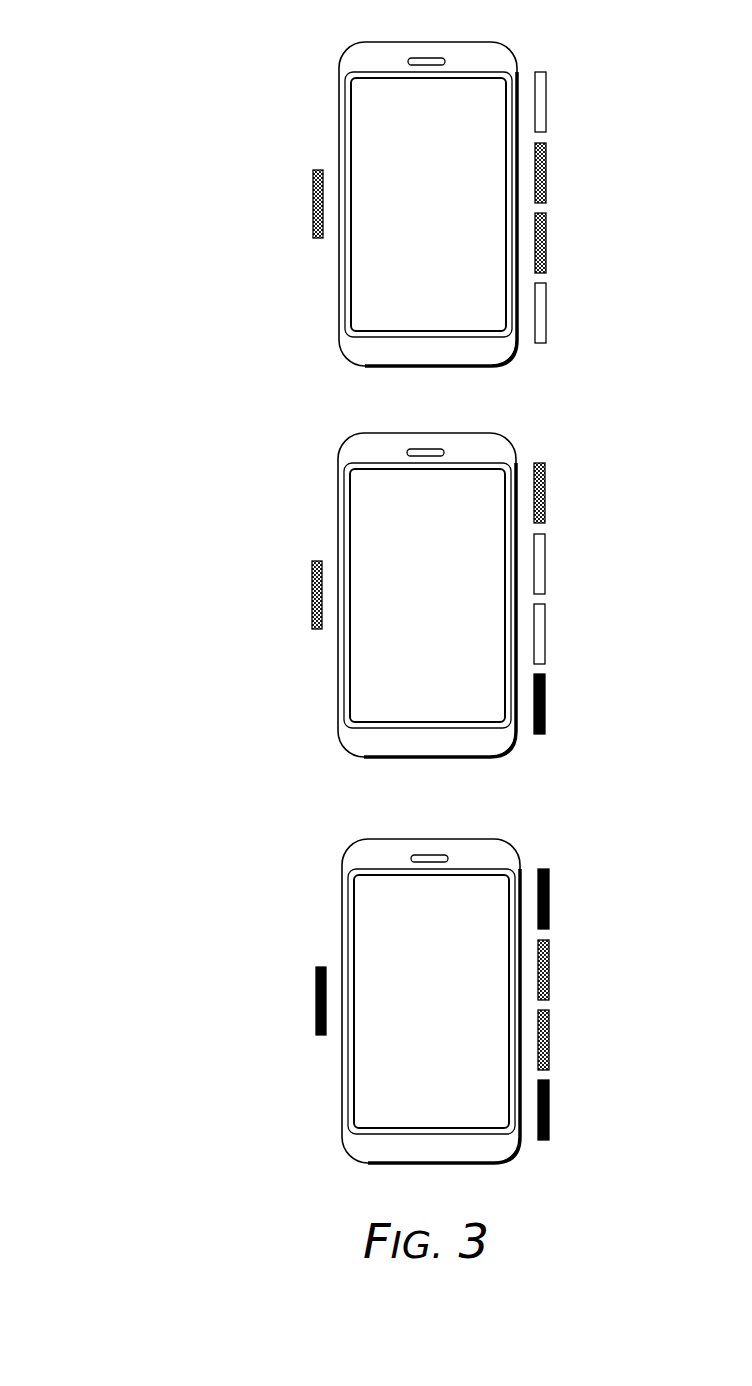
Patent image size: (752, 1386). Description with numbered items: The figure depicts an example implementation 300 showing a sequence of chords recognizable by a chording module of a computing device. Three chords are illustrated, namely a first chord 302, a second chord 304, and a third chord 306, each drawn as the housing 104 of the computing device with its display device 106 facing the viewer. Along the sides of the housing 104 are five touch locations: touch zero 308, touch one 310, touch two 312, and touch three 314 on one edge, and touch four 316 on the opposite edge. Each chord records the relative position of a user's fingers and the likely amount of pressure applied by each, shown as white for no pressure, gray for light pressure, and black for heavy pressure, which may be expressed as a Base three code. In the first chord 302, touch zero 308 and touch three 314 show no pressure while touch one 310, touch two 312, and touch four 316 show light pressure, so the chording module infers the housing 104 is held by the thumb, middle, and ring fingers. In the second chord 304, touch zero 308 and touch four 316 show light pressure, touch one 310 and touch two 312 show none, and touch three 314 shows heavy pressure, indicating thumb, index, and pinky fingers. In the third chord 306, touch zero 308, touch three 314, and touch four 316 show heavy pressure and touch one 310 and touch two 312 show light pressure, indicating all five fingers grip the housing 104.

The example implementation 300 is at (145, 68).
The first chord 302 is at (287, 52).
The second chord 304 is at (301, 427).
The third chord 306 is at (301, 812).
The housing 104 is at (504, 64).
The display device 106 is at (498, 101).
The touch 0 308 is at (591, 125).
The touch 1 310 is at (591, 196).
The touch 2 312 is at (591, 266).
The touch 3 314 is at (591, 336).
The touch 4 316 is at (268, 225).